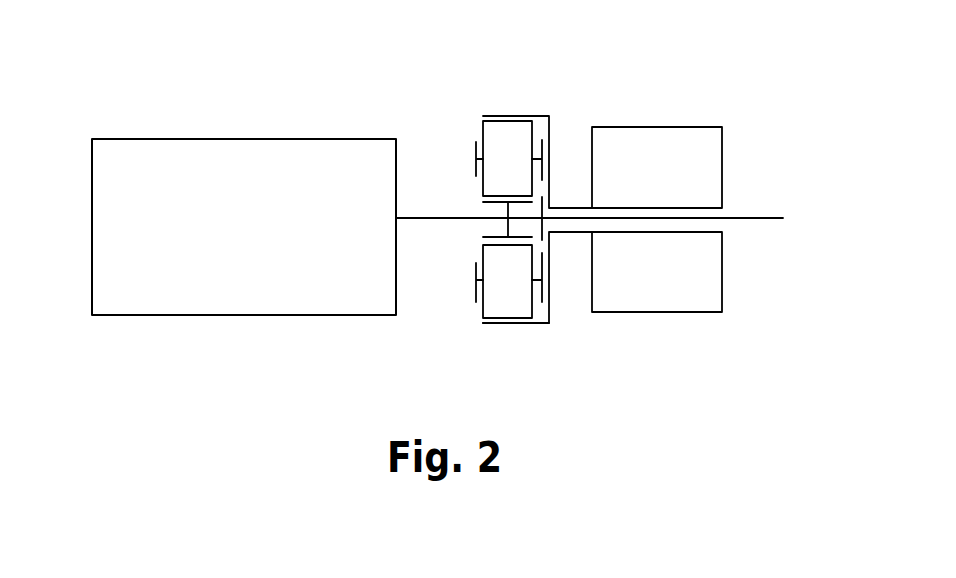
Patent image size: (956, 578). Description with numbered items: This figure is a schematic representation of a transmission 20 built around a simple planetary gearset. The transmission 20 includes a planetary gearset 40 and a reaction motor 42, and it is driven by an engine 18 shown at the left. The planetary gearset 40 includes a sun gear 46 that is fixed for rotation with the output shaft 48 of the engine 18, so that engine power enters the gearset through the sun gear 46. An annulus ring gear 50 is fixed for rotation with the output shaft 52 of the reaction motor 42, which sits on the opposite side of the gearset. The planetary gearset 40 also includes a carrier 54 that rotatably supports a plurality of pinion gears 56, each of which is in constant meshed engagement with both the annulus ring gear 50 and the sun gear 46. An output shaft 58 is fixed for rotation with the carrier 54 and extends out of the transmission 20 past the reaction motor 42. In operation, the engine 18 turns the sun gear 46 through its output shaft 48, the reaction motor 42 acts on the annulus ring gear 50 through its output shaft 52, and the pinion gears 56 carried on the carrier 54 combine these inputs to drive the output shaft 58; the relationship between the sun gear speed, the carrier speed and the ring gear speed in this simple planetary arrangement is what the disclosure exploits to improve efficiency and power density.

The engine 18 is at (258, 139).
The transmission 20 is at (692, 39).
The planetary gearset 40 is at (468, 95).
The reaction motor 42 is at (697, 127).
The sun gear 46 is at (486, 199).
The output shaft of engine 48 is at (418, 220).
The annulus ring gear 50 is at (507, 116).
The output shaft of reaction motor 52 is at (568, 207).
The carrier 54 is at (476, 284).
The pinion gears 56 is at (518, 323).
The output shaft 58 is at (758, 218).